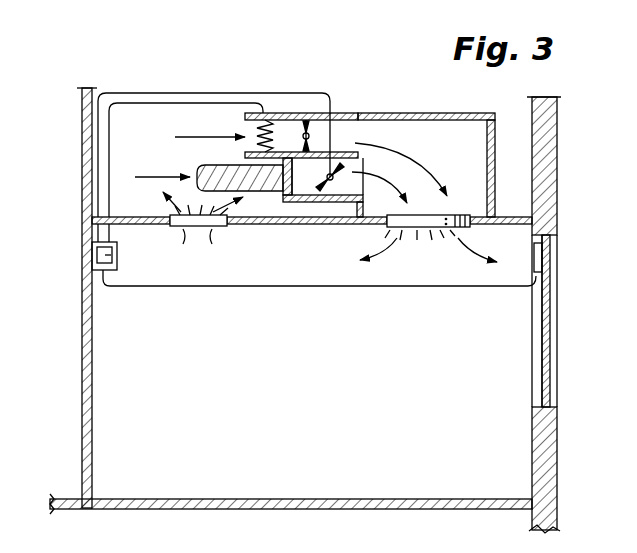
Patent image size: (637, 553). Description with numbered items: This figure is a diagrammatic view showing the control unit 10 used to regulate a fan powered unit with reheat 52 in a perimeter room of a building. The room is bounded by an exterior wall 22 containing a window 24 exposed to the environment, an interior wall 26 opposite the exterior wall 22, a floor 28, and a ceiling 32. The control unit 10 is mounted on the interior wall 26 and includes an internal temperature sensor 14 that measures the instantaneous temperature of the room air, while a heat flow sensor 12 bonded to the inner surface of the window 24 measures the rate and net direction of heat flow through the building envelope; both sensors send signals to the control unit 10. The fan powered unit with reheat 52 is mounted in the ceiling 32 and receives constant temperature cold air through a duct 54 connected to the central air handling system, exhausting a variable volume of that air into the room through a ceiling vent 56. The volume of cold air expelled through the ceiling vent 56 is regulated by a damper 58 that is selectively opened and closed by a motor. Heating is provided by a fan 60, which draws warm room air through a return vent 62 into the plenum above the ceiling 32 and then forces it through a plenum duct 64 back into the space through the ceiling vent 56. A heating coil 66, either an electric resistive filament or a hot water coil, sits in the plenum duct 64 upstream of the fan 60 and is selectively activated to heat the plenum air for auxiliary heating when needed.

The control unit 10 is at (121, 245).
The heat flow sensor 12 is at (542, 258).
The temperature sensor 14 is at (111, 256).
The exterior wall 22 is at (557, 158).
The window 24 is at (550, 340).
The interior wall 26 is at (82, 414).
The floor 28 is at (320, 509).
The ceiling 32 is at (272, 227).
The fan powered unit with reheat 52 is at (468, 110).
The duct 54 is at (220, 170).
The ceiling vent 56 is at (420, 232).
The damper 58 is at (348, 172).
The fan 60 is at (309, 133).
The return vent 62 is at (194, 229).
The plenum duct 64 is at (290, 113).
The heating coil 66 is at (260, 124).